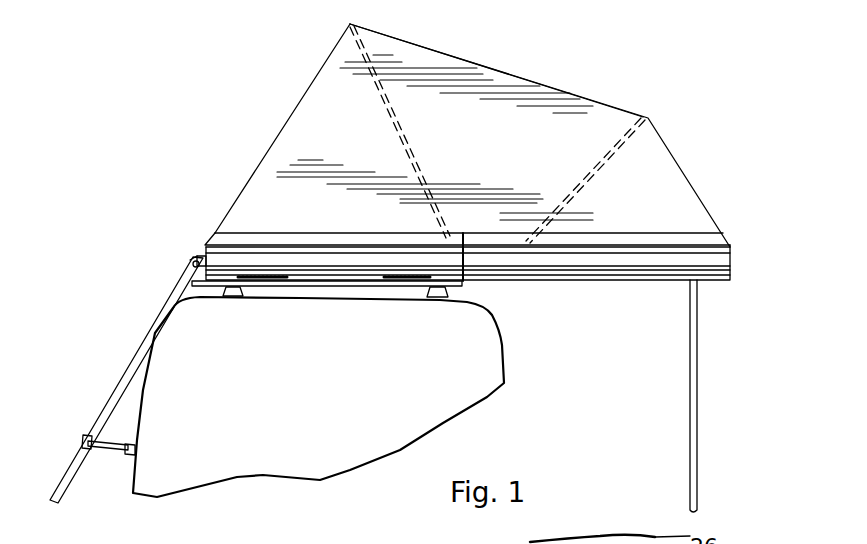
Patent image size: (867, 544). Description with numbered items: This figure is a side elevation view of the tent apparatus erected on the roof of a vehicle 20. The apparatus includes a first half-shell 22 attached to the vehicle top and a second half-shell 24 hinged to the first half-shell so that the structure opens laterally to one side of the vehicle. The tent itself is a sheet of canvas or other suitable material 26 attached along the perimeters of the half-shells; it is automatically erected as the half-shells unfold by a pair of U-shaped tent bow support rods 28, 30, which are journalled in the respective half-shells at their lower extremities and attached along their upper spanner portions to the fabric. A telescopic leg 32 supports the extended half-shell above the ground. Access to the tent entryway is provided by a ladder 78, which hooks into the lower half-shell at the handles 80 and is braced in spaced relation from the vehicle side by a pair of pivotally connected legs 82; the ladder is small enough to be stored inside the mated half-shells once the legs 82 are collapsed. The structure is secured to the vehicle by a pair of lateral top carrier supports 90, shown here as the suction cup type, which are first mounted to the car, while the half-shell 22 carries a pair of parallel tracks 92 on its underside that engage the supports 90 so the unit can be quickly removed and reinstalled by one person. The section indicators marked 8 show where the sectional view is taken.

The vehicle 20 is at (505, 368).
The first half-shell 22 is at (256, 232).
The second half-shell 24 is at (748, 266).
The sheet of canvas 26 is at (660, 153).
The tent bow support rod 28 is at (413, 155).
The tent bow support rod 30 is at (586, 191).
The telescopic leg 32 is at (697, 323).
The ladder 78 is at (153, 312).
The handles 80 is at (200, 262).
The pivotally connected legs 82 is at (110, 453).
The lateral top carrier supports 90 is at (387, 287).
The parallel tracks 92 is at (323, 280).
The section line 8- 8 is at (528, 163).